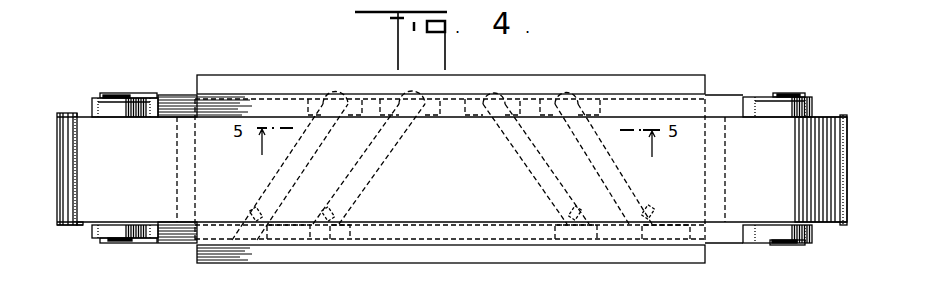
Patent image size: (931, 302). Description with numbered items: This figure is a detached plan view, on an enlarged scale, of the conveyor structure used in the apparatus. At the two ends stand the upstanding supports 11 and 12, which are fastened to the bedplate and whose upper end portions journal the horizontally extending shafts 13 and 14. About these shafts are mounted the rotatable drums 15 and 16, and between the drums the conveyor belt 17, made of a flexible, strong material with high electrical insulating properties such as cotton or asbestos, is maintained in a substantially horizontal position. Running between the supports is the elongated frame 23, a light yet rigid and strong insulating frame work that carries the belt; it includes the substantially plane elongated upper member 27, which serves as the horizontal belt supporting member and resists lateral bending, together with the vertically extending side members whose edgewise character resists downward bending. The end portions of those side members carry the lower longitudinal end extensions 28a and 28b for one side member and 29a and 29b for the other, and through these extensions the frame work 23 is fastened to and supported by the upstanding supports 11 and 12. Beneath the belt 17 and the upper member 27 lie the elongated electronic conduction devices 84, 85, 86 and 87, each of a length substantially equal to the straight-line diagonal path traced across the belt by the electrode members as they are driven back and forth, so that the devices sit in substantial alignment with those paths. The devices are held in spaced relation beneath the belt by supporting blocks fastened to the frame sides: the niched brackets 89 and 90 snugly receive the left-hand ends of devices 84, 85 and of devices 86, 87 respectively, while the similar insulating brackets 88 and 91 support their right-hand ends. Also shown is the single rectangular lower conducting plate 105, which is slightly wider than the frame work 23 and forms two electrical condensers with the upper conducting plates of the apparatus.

The upstanding support 11 is at (107, 233).
The upstanding support 12 is at (807, 237).
The shaft 13 is at (113, 97).
The shaft 14 is at (783, 97).
The drum 15 is at (82, 224).
The drum 16 is at (825, 115).
The conveyor belt 17 is at (92, 150).
The elongated frame 23 is at (184, 85).
The upper member 27 is at (230, 103).
The lower longitudinal end extension 28a is at (752, 95).
The lower longitudinal end extension 28b is at (147, 95).
The lower longitudinal end extension 29a is at (758, 244).
The lower longitudinal end extension 29b is at (147, 243).
The electronic conduction device 84 is at (285, 169).
The electronic conduction device 85 is at (362, 181).
The electronic conduction device 86 is at (537, 172).
The electronic conduction device 87 is at (635, 167).
The supporting block 88 is at (278, 205).
The supporting block 89 is at (336, 115).
The supporting block 90 is at (542, 105).
The supporting block 91 is at (617, 206).
The lower conducting plate 105 is at (327, 84).